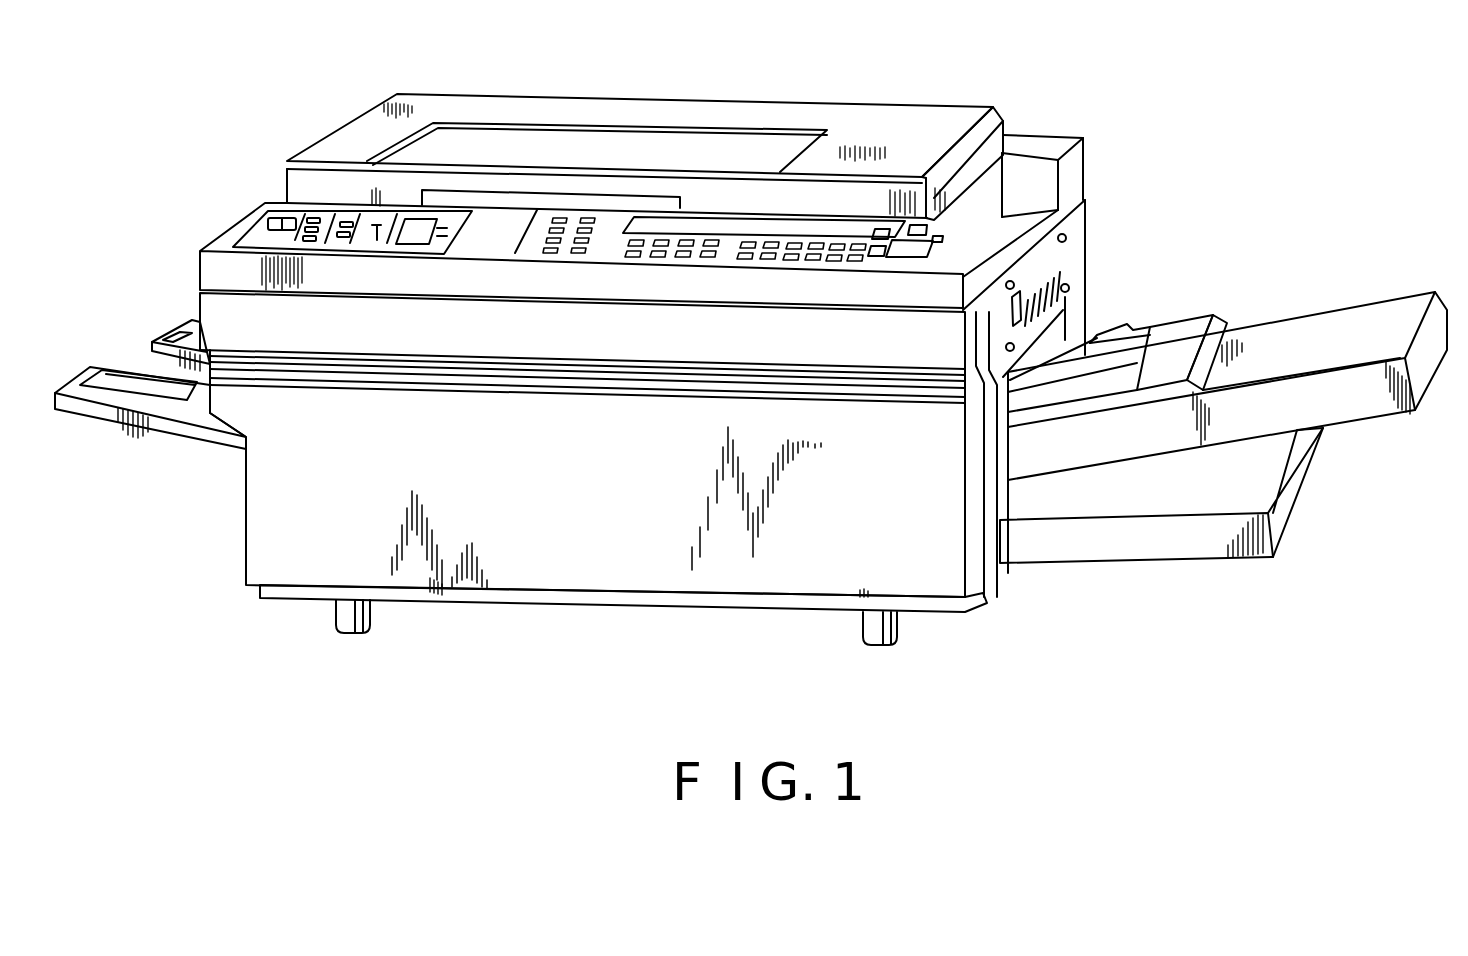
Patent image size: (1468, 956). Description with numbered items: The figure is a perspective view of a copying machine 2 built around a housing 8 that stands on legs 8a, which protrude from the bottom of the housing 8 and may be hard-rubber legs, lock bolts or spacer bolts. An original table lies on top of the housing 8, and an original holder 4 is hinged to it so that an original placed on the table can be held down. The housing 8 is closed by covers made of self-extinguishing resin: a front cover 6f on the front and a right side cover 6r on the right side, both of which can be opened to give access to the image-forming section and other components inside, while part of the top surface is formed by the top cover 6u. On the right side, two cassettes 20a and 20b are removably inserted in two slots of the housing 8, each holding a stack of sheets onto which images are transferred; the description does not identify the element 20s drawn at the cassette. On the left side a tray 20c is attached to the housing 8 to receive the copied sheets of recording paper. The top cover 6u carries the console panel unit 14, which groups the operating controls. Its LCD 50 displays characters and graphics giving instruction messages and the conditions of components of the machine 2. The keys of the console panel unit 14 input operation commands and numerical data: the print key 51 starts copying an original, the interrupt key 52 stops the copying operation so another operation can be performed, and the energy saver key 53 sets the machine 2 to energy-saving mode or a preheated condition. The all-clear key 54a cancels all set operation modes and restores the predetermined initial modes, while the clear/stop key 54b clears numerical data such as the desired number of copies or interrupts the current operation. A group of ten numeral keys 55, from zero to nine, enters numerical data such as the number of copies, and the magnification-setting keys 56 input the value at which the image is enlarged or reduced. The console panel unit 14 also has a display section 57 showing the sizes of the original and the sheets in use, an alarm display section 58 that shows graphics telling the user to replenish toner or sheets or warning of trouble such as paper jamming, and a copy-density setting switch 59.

The copying machine 2 is at (1083, 135).
The original holder 4 is at (960, 116).
The top cover 6u is at (230, 228).
The front cover 6f is at (708, 575).
The right side cover 6r is at (1071, 260).
The housing 8 is at (588, 593).
The legs 8a is at (340, 628).
The console panel unit 14 is at (492, 227).
The cassette 20a is at (1392, 406).
The cassette 20b is at (1182, 552).
The tray 20c is at (168, 435).
The paper guide slider 20s is at (1130, 357).
The LCD 50 is at (712, 222).
The print key 51 is at (917, 250).
The interrupt key 52 is at (940, 240).
The energy saver key 53 is at (928, 224).
The all-clear key 54a is at (883, 233).
The clear/stop key 54b is at (873, 247).
The group of numeral keys 55 is at (727, 278).
The magnification-setting keys 56 is at (610, 275).
The display section 57 is at (578, 273).
The alarm display section 58 is at (415, 247).
The copy-density setting switch 59 is at (377, 233).